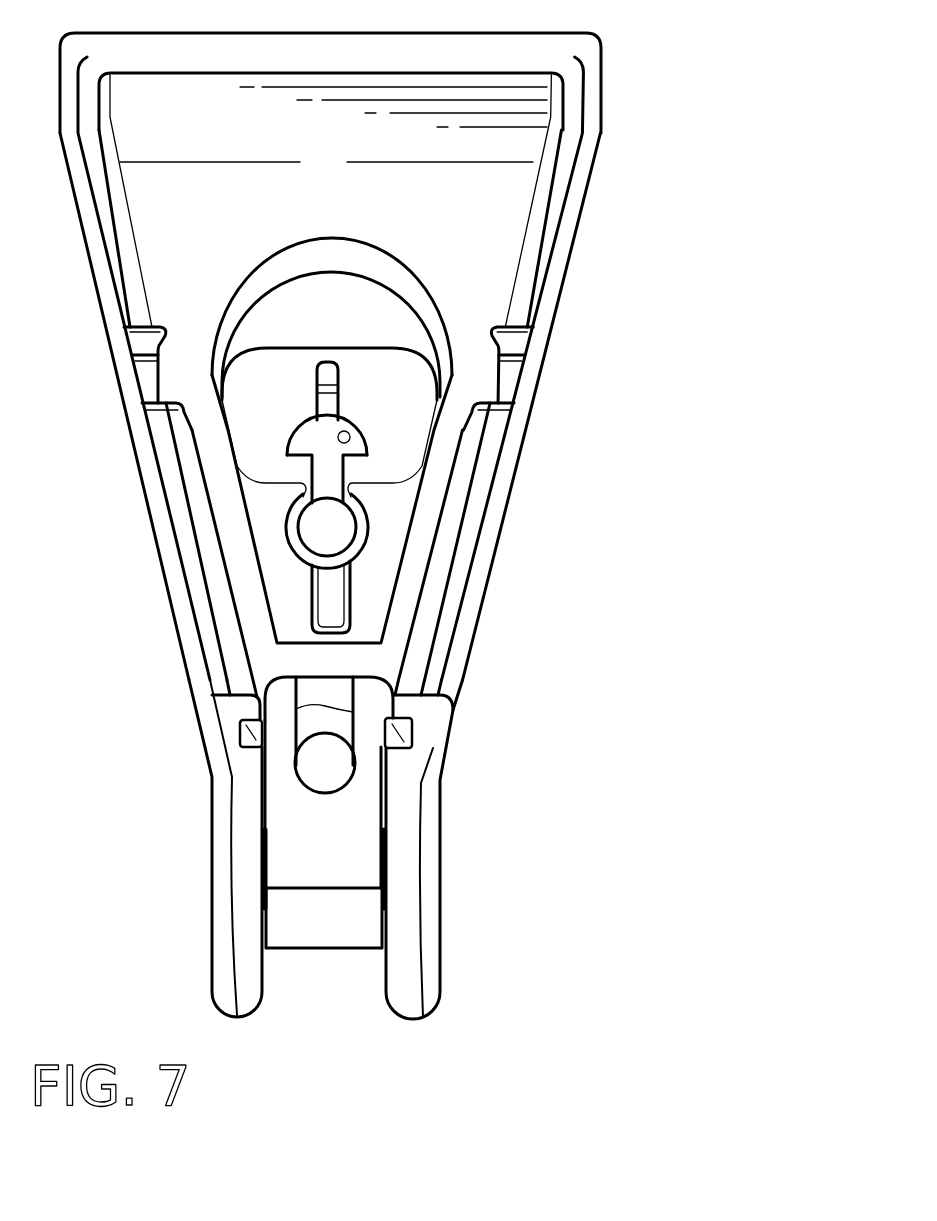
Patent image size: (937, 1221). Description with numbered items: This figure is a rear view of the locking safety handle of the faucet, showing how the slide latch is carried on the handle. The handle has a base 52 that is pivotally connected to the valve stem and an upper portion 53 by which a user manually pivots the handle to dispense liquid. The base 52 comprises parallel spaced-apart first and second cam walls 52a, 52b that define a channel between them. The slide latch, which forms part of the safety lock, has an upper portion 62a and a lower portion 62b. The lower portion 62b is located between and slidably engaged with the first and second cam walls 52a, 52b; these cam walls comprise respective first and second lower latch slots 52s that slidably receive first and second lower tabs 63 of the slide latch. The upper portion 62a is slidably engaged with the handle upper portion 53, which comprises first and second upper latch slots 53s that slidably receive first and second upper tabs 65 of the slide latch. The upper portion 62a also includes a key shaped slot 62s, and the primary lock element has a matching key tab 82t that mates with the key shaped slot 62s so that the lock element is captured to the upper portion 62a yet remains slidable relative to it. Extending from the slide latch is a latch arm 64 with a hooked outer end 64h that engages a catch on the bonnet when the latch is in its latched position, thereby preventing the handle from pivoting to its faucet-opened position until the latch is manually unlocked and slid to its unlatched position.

The upper portion 53 is at (498, 224).
The upper latch slots 53s is at (157, 388).
The upper tabs 65 is at (177, 393).
The upper portion 62a is at (423, 525).
The key tab 82t is at (313, 432).
The key shaped slot 62s is at (363, 443).
The lower portion 62b is at (372, 700).
The lower tabs 63 is at (240, 710).
The lower latch slots 52s is at (250, 732).
The base 52 is at (318, 849).
The second cam wall 52b is at (218, 928).
The first cam wall 52a is at (425, 955).
The latch arm 64 is at (348, 855).
The hooked outer end 64h is at (309, 950).